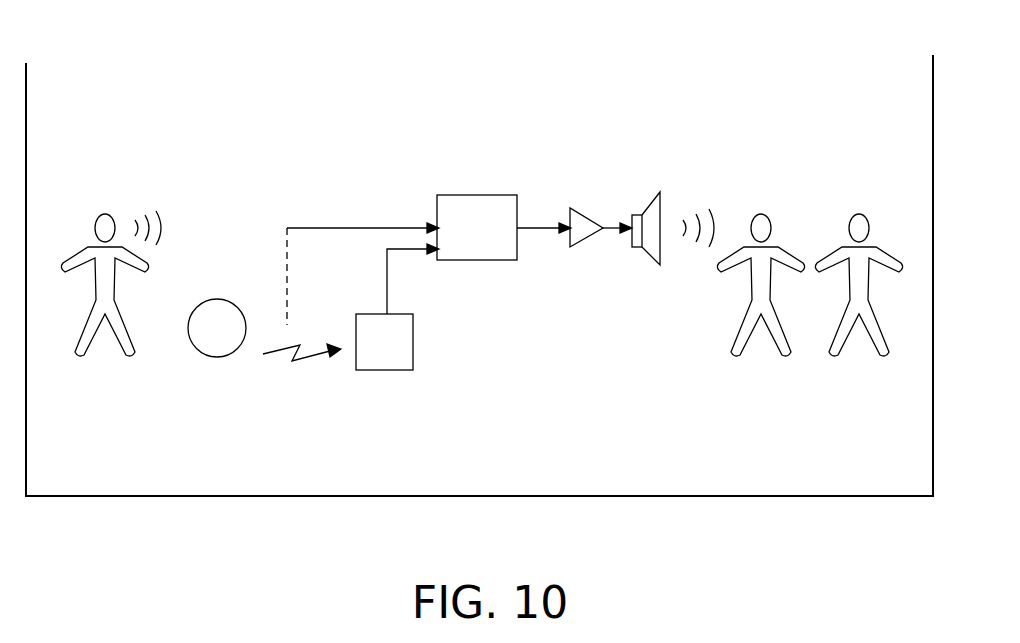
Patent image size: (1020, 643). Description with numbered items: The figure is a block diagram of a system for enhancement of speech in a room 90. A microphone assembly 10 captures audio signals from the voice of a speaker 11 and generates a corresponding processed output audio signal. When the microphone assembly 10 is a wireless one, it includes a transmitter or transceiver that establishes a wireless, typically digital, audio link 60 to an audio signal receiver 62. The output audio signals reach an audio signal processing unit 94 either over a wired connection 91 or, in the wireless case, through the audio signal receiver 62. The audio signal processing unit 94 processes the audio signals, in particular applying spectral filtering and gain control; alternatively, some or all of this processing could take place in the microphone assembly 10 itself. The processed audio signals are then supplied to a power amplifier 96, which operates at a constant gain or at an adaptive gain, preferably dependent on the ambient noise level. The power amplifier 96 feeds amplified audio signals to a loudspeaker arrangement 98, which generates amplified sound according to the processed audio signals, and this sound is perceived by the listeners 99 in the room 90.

The microphone assembly 10 is at (212, 350).
The speaker 11 is at (99, 206).
The wireless audio link 60 is at (305, 362).
The audio signal receiver 62 is at (393, 362).
The room 90 is at (837, 473).
The wired connection 91 is at (358, 227).
The audio signal processing unit 94 is at (462, 241).
The power amplifier 96 is at (583, 243).
The loudspeaker arrangement 98 is at (642, 250).
The listeners 99 is at (801, 204).